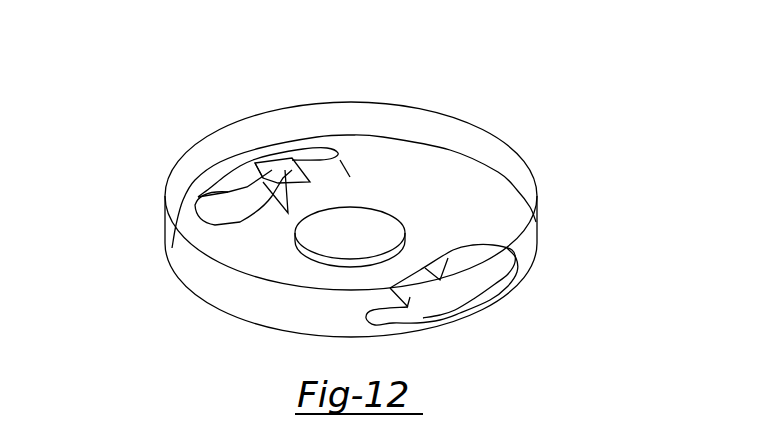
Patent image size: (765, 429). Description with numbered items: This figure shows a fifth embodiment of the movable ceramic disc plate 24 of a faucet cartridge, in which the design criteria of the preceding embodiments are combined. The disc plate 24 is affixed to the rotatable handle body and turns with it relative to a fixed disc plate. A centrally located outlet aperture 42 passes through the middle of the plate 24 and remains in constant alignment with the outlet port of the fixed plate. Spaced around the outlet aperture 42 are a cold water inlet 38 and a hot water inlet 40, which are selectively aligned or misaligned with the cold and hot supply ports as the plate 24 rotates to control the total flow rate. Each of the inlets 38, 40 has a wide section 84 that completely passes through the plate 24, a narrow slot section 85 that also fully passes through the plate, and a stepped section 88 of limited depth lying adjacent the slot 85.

The movable ceramic disc plate 24 is at (393, 152).
The cold water inlet 38 is at (497, 263).
The hot water inlet 40 is at (228, 192).
The outlet aperture 42 is at (350, 243).
The wide section 84 is at (267, 207).
The narrow slot section 85 is at (350, 176).
The stepped section 88 is at (227, 192).